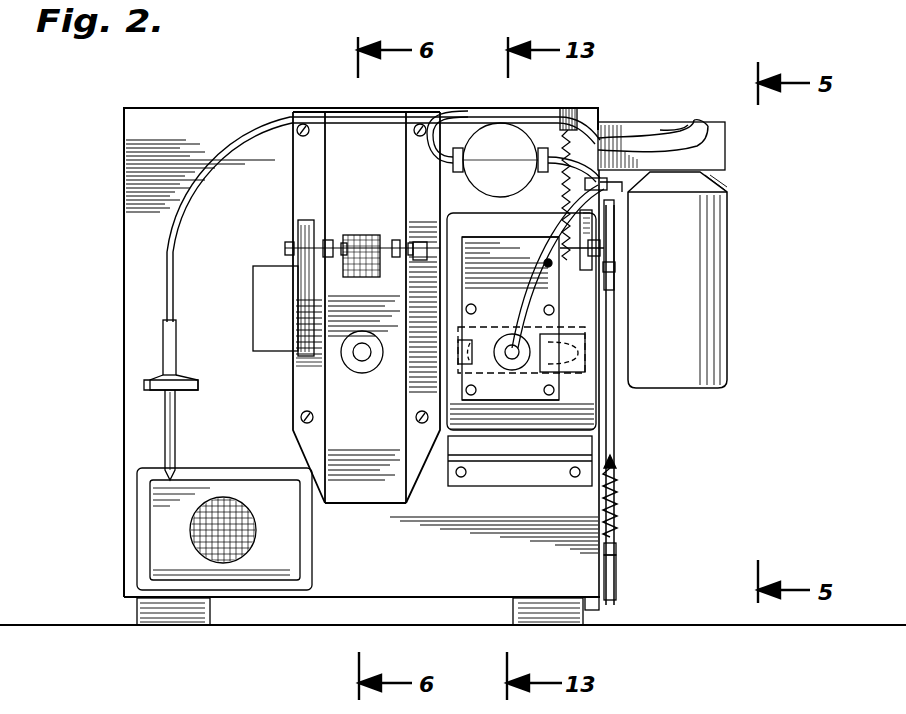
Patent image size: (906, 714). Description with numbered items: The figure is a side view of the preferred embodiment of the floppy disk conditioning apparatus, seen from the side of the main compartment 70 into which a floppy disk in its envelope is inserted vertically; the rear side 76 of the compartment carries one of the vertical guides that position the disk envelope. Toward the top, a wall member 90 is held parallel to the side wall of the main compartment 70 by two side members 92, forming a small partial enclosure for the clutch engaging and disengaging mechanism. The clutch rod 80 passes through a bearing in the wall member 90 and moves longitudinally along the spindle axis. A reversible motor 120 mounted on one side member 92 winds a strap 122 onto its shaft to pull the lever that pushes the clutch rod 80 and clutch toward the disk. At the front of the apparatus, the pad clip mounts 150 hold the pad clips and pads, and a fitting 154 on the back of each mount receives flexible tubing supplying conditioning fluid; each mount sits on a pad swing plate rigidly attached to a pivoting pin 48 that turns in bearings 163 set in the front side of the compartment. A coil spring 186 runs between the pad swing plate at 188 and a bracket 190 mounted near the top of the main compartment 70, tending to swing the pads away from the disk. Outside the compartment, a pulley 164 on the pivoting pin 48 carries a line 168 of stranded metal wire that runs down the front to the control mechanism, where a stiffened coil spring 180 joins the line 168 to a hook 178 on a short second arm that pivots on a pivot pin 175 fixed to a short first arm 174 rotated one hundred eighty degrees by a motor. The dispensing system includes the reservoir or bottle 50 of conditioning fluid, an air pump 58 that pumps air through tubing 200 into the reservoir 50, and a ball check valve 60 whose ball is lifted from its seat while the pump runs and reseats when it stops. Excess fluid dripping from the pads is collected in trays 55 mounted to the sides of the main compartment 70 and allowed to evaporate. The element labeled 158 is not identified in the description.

The main compartment 70 is at (124, 269).
The rear side 76 is at (123, 379).
The tubing 200 is at (223, 147).
The ball check valve 60 is at (150, 393).
The air pump 58 is at (155, 540).
The reversible motor 120 is at (262, 304).
The strap 122 is at (381, 236).
The side members 92 is at (404, 172).
The wall member 90 is at (366, 307).
The clutch rod 80 is at (362, 360).
The brackets 190 is at (568, 115).
The coil springs 186 is at (600, 140).
The reservoir 50 is at (728, 352).
The pivoting pin 48 is at (600, 205).
The bearings 163 is at (600, 248).
The pulley 164 is at (615, 268).
The spring attachment point 188 is at (547, 263).
The pad clip mount 150 is at (578, 333).
The plate 158 is at (490, 392).
The fitting 154 is at (512, 372).
The trays 55 is at (546, 447).
The line 168 is at (615, 421).
The stiffened coil spring 180 is at (617, 507).
The hook 178 is at (618, 549).
The pivot pin 175 is at (605, 612).
The short first arm 174 is at (590, 611).